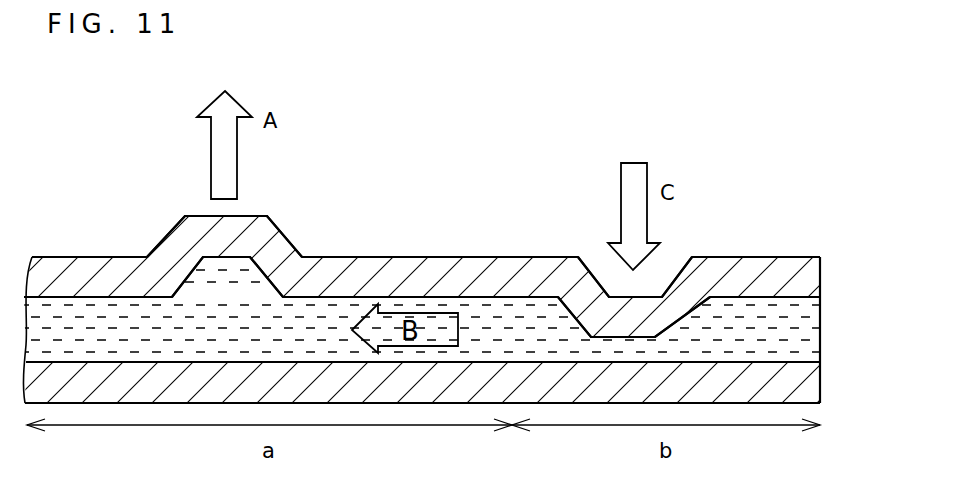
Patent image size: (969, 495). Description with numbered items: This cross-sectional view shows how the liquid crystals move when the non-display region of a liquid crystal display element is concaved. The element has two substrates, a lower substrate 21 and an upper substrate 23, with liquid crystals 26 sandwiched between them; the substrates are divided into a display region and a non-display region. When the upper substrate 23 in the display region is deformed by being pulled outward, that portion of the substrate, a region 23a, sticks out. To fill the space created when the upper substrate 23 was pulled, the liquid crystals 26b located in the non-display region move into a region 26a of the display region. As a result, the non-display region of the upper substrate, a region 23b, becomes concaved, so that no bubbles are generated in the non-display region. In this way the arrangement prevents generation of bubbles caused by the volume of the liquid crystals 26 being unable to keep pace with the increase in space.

The lower substrate 21 is at (812, 381).
The upper substrate 23 is at (812, 278).
The liquid crystals 26 is at (812, 332).
The region of the substrate that sticks out 23a is at (260, 216).
The region of the display region 26a is at (253, 280).
The concaved region 23b is at (577, 287).
The liquid crystals in the non-display region 26b is at (568, 333).